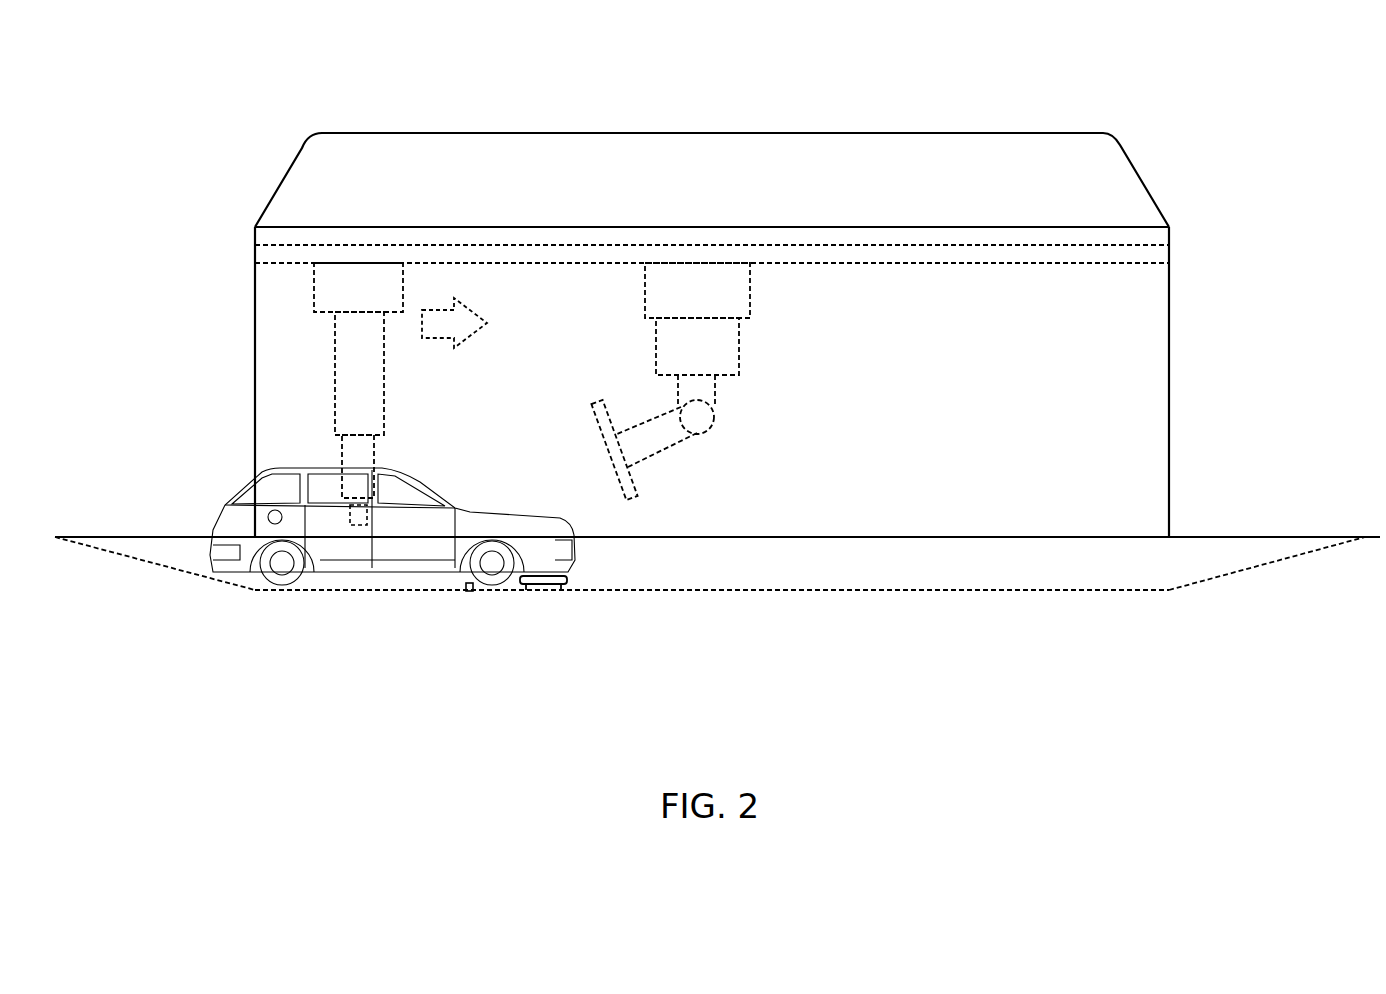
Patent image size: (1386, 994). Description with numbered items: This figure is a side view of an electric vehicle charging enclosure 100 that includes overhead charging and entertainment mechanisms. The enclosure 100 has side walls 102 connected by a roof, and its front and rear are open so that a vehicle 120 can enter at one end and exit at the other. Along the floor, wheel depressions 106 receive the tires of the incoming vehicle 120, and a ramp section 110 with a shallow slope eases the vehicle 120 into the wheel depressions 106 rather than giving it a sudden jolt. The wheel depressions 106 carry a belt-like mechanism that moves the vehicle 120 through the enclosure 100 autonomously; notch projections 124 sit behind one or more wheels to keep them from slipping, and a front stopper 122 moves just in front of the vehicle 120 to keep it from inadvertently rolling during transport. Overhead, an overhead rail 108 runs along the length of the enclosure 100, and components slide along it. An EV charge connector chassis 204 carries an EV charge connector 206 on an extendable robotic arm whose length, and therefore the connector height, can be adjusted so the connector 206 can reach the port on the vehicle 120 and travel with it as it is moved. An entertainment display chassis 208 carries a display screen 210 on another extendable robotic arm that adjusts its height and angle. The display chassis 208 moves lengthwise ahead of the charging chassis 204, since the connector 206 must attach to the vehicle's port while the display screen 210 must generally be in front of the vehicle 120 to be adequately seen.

The EV charging enclosure 100 is at (1186, 125).
The side walls 102 is at (1170, 385).
The wheel depressions 106 is at (777, 590).
The overhead rail 108 is at (460, 245).
The ramp section 110 is at (150, 565).
The vehicle 120 is at (377, 573).
The front stopper 122 is at (548, 590).
The notch projections 124 is at (468, 592).
The EV charge connector chassis 204 is at (335, 347).
The EV charge connector 206 is at (355, 515).
The entertainment display chassis 208 is at (668, 263).
The display screen 210 is at (633, 500).